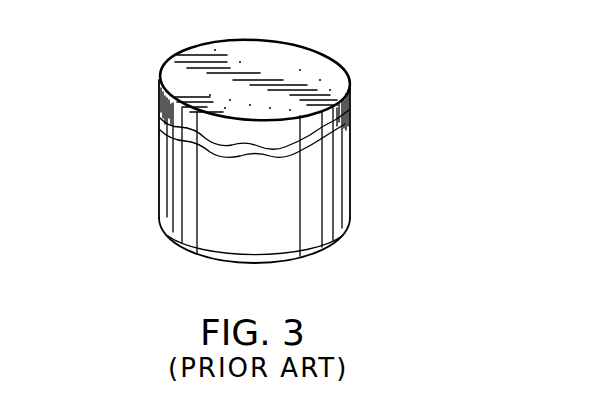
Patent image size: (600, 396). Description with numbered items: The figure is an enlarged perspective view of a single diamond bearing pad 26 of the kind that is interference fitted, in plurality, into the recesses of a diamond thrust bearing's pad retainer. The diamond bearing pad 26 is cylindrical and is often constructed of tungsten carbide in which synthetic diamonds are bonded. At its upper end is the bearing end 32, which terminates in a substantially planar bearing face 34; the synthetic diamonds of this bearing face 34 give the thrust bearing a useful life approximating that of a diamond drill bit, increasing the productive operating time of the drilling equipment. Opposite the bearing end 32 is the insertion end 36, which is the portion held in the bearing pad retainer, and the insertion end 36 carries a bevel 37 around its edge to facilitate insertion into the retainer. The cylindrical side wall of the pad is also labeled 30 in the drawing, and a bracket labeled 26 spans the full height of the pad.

The diamond bearing pad 26 is at (410, 42).
The side wall 30 is at (378, 152).
The bearing end 32 is at (163, 64).
The substantially planar bearing face 34 is at (285, 66).
The insertion end 36 is at (310, 260).
The bevel 37 is at (207, 255).